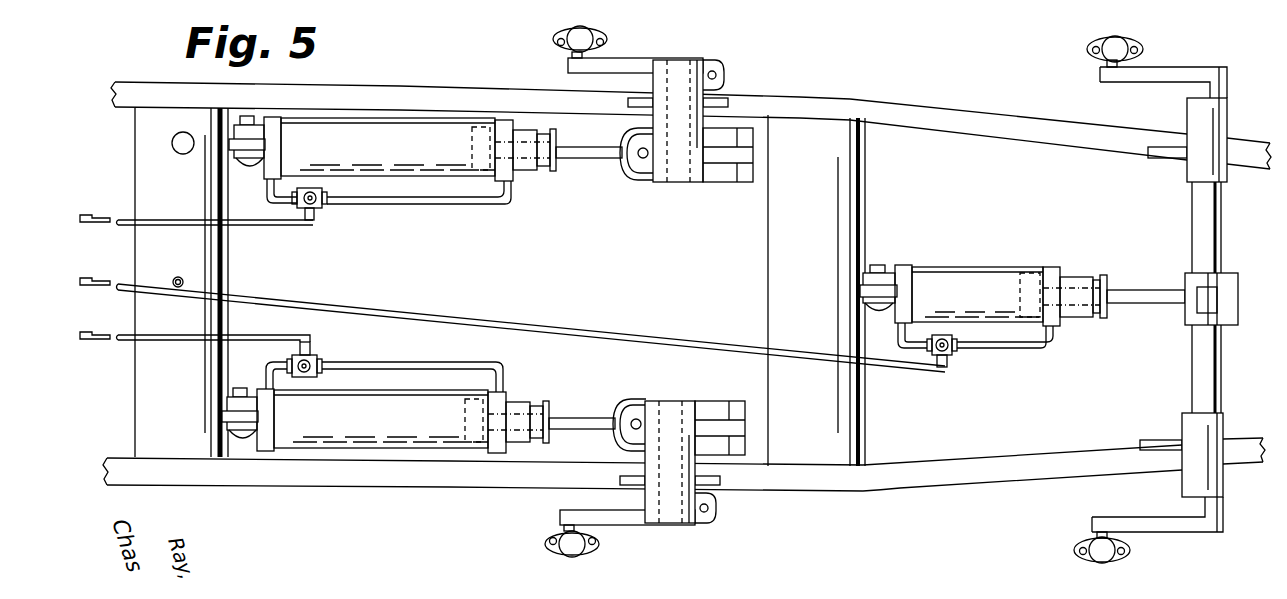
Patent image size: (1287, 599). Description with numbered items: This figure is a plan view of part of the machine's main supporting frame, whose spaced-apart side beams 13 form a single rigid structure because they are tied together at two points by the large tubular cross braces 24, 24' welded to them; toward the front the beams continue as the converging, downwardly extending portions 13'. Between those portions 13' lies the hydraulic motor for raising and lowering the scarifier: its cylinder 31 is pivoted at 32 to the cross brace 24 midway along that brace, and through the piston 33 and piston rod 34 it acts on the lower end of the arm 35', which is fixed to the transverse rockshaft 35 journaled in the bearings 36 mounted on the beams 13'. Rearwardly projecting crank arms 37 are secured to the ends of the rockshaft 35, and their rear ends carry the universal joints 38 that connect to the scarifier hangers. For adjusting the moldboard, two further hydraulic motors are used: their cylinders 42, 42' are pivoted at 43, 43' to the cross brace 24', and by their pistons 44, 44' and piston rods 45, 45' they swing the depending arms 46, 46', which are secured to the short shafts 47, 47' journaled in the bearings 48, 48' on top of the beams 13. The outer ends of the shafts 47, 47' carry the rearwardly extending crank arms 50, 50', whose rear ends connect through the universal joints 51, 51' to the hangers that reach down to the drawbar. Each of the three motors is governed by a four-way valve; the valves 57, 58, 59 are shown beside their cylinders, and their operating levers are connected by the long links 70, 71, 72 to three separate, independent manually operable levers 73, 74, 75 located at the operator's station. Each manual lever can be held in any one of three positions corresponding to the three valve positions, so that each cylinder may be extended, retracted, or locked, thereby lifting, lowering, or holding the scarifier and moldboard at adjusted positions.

The side beam 13 is at (483, 287).
The converging and downwardly extending portion 13' is at (1060, 302).
The cross brace 24 is at (846, 290).
The cross brace 24' is at (216, 282).
The cylinder 31 is at (955, 275).
The pivot 32 is at (880, 265).
The piston 33 is at (1035, 275).
The piston rod 34 is at (1143, 295).
The rockshaft 35 is at (1226, 297).
The arm 35' is at (1226, 320).
The bearing 36 is at (1193, 163).
The crank arm 37 is at (1167, 72).
The universal joint 38 is at (1098, 42).
The cylinder 42 is at (410, 122).
The cylinder 42' is at (403, 395).
The pivot 43 is at (261, 114).
The pivot 43' is at (240, 395).
The piston 44 is at (490, 116).
The piston 44' is at (480, 391).
The piston rod 45 is at (604, 165).
The piston rod 45' is at (597, 413).
The depending arm 46 is at (728, 177).
The depending arm 46' is at (721, 410).
The short shaft 47 is at (716, 121).
The short shaft 47' is at (662, 439).
The bearing 48 is at (654, 118).
The bearing 48' is at (647, 462).
The crank arm 50 is at (646, 60).
The crank arm 50' is at (638, 526).
The universal joint 51 is at (572, 33).
The universal joint 51' is at (572, 559).
The valve 57 is at (958, 353).
The valve 58 is at (322, 210).
The valve 59 is at (316, 356).
The long link 70 is at (568, 330).
The long link 71 is at (179, 220).
The long link 72 is at (163, 335).
The manually operable lever 73 is at (90, 213).
The manually operable lever 74 is at (85, 277).
The manually operable lever 75 is at (80, 332).